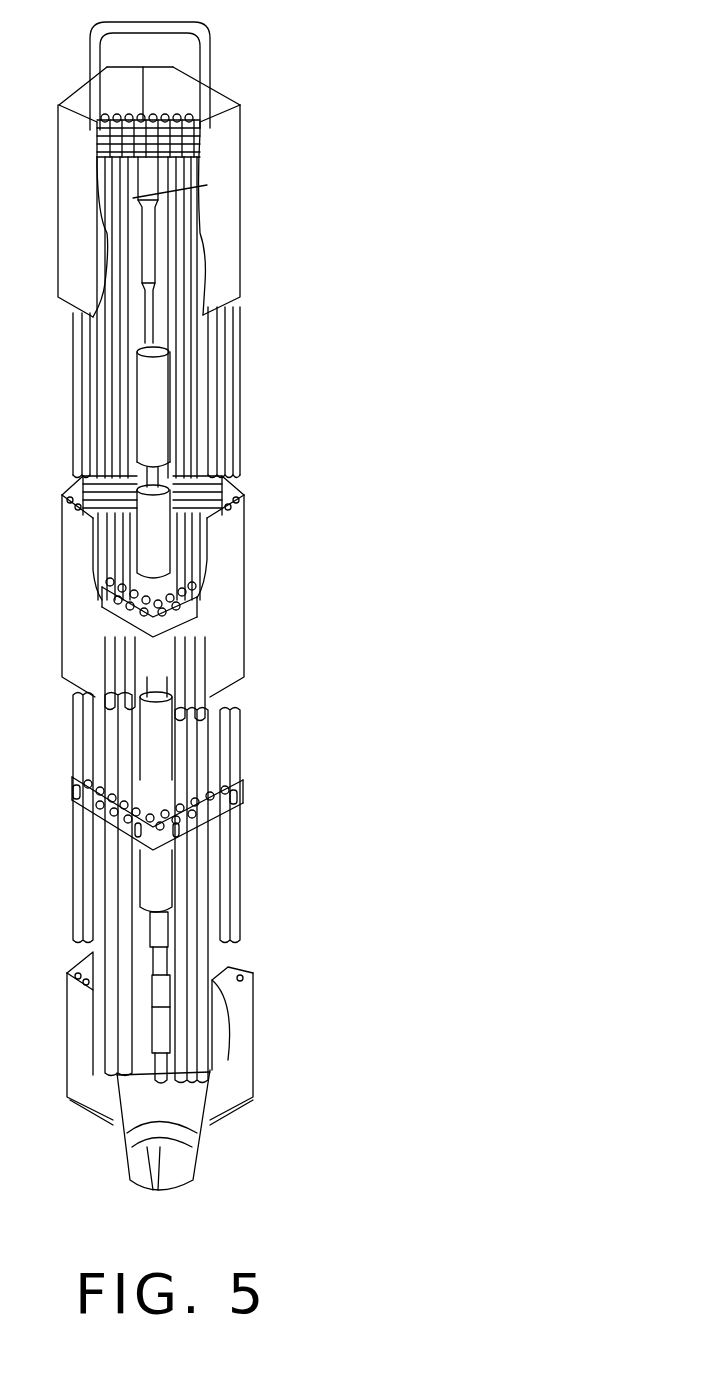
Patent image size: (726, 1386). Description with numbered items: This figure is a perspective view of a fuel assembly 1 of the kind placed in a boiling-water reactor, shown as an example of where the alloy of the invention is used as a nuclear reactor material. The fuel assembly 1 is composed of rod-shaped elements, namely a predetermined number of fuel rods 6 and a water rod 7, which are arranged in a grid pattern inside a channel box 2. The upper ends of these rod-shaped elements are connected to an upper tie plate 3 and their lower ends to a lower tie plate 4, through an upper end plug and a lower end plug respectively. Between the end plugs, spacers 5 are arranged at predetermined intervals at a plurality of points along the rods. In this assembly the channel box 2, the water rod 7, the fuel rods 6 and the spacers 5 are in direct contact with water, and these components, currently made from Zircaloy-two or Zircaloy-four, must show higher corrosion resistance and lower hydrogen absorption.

The fuel assembly 1 is at (205, 43).
The channel box 2 is at (253, 995).
The upper tie plate 3 is at (238, 102).
The lower tie plate 4 is at (245, 1120).
The spacer 5 is at (197, 610).
The fuel rods 6 is at (237, 395).
The water rod 7 is at (162, 760).